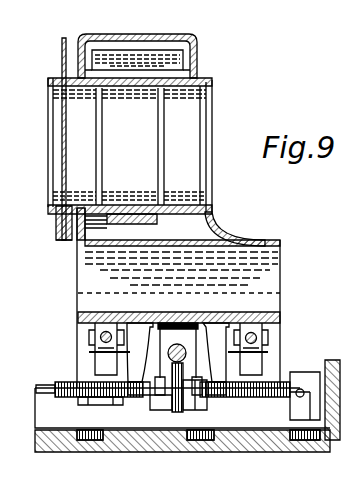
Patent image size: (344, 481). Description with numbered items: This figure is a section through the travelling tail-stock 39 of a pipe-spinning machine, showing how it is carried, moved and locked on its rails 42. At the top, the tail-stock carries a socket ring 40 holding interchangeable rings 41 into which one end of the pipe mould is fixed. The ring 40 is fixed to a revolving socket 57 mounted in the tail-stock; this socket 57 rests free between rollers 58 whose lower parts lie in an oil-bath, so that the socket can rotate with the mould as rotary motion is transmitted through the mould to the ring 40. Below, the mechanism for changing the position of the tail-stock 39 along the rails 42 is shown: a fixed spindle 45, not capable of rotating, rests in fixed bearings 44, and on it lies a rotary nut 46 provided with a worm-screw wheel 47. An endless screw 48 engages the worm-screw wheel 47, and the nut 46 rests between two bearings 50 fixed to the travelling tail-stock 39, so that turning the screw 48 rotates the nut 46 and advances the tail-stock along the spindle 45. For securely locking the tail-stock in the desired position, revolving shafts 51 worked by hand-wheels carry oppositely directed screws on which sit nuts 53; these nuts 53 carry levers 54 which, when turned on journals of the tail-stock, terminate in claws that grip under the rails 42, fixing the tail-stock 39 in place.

The travelling tail-stock 39 is at (222, 217).
The socket ring 40 is at (64, 40).
The interchangeable rings 41 is at (60, 212).
The rails 42 is at (40, 398).
The fixed bearings 44 is at (305, 380).
The fixed spindle 45 is at (68, 382).
The rotary nut 46 is at (165, 412).
The worm-screw wheel 47 is at (201, 405).
The endless screw 48 is at (177, 344).
The bearings 50 is at (148, 392).
The revolving shafts 51 is at (105, 328).
The nuts 53 is at (110, 333).
The levers 54 is at (113, 357).
The revolving socket 57 is at (214, 101).
The rollers 58 is at (198, 54).